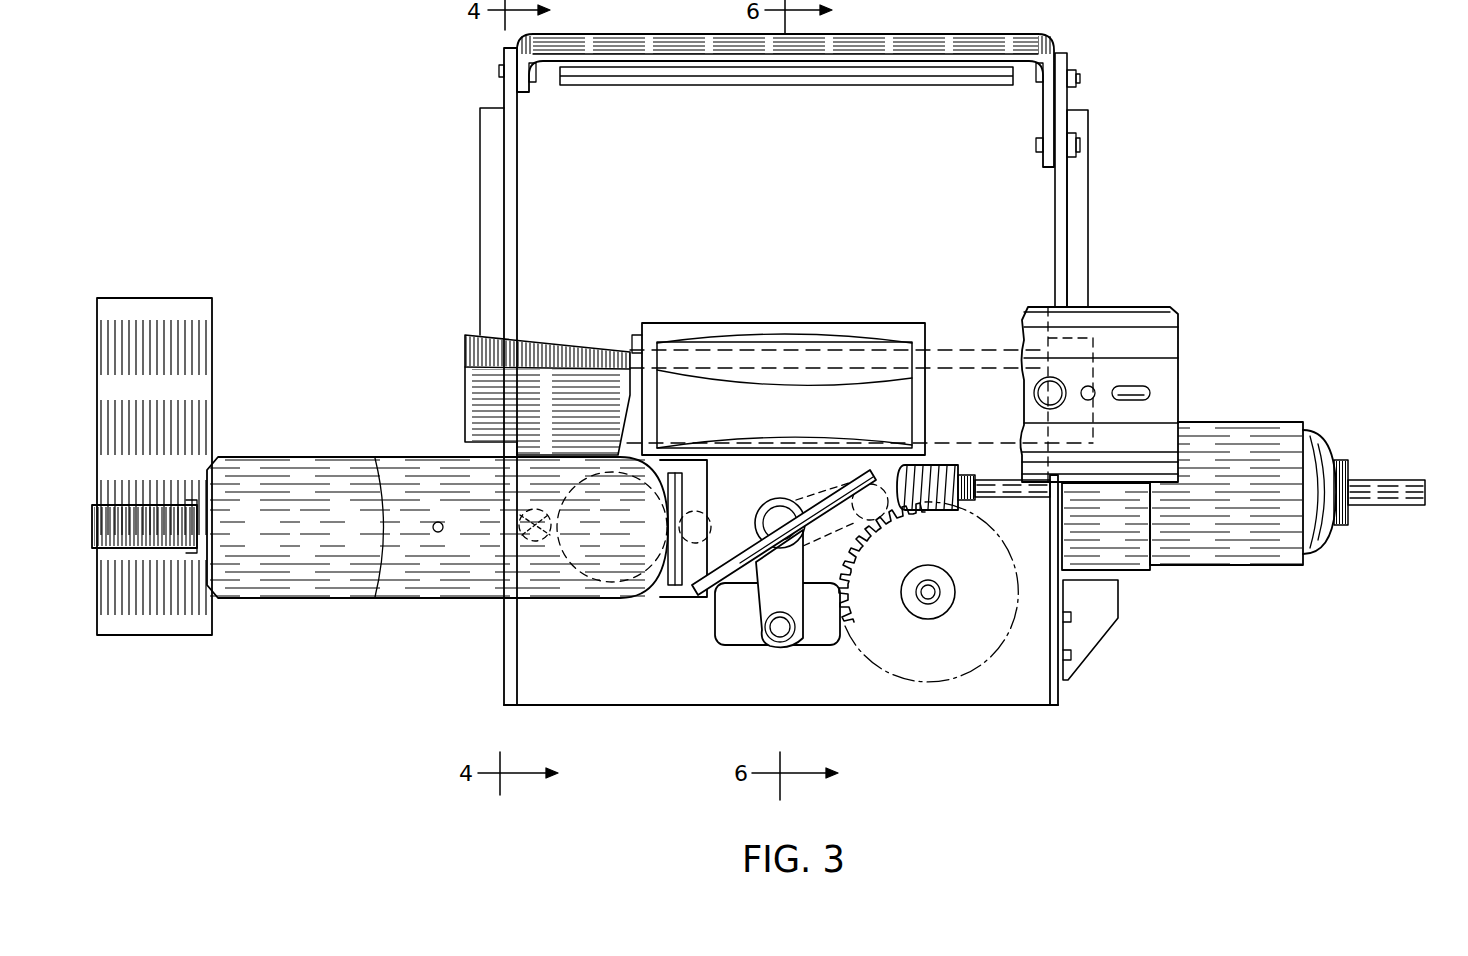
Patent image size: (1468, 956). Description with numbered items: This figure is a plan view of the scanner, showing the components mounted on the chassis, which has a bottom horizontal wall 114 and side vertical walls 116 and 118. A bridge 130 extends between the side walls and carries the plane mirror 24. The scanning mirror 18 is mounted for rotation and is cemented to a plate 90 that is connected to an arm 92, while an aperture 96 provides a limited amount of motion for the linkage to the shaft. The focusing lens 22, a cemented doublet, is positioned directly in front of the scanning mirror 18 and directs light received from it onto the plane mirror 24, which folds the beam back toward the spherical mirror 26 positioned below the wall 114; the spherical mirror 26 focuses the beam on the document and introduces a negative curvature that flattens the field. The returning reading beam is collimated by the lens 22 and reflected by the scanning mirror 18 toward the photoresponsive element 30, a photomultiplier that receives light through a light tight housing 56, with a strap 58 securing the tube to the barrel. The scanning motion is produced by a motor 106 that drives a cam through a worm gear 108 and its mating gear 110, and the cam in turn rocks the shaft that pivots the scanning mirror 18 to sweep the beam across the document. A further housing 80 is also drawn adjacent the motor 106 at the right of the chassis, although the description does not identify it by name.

The bridge 130 is at (969, 44).
The plane mirror 24 is at (729, 86).
The spherical mirror 26 is at (563, 351).
The focusing lens 22 is at (797, 417).
The housing 80 is at (1128, 312).
The motor 106 is at (1205, 431).
The light tight housing 56 is at (302, 462).
The strap 58 is at (95, 516).
The photoresponsive element 30 is at (152, 623).
The scanning mirror 18 is at (748, 550).
The plate 90 is at (808, 528).
The arm 92 is at (797, 597).
The aperture 96 is at (755, 623).
The worm gear 108 is at (952, 478).
The mating gear 110 is at (988, 576).
The bottom horizontal wall 114 is at (641, 656).
The side vertical wall 116 is at (1059, 700).
The side vertical wall 118 is at (503, 641).